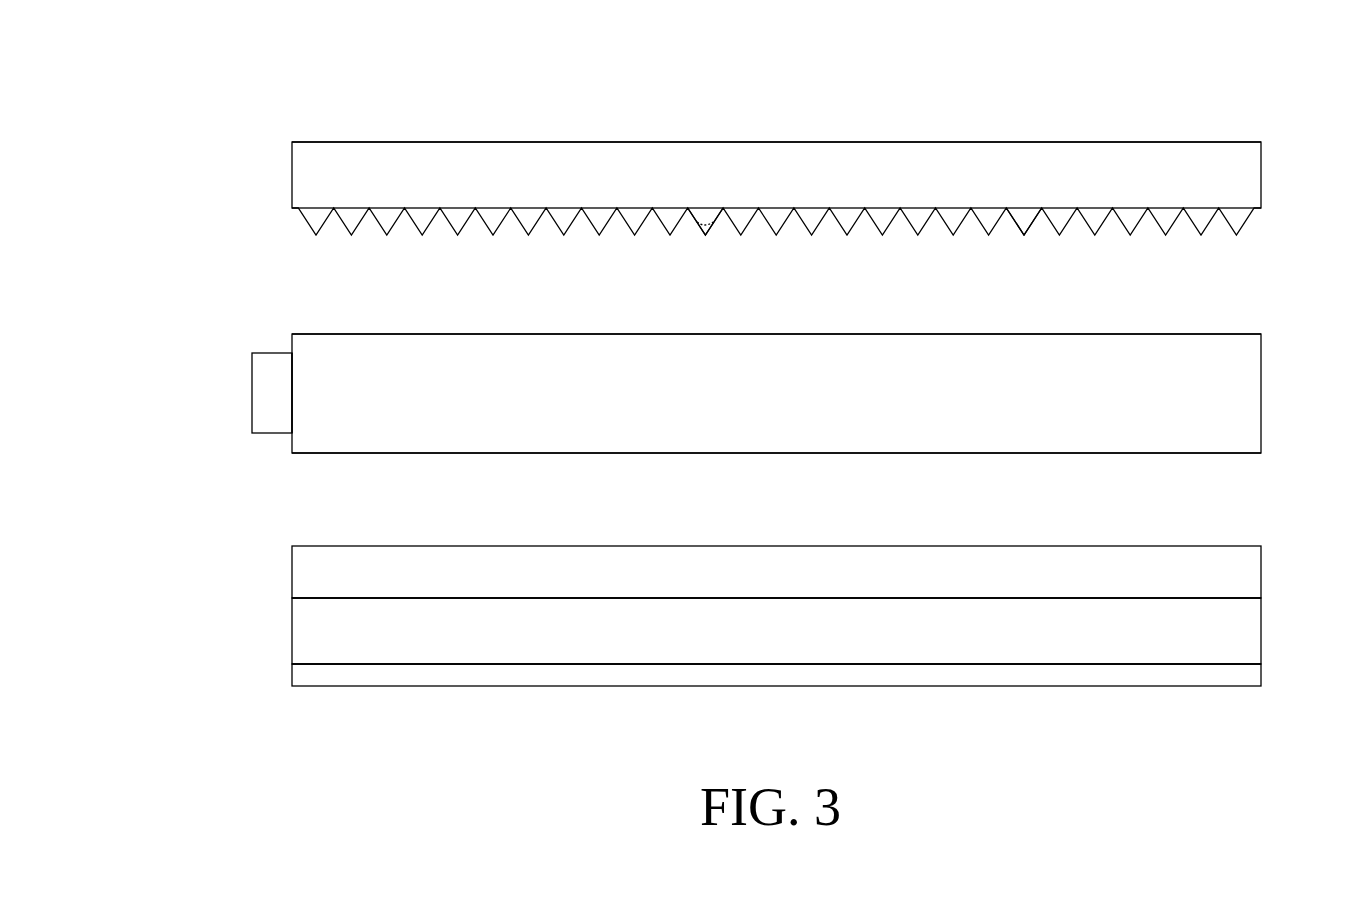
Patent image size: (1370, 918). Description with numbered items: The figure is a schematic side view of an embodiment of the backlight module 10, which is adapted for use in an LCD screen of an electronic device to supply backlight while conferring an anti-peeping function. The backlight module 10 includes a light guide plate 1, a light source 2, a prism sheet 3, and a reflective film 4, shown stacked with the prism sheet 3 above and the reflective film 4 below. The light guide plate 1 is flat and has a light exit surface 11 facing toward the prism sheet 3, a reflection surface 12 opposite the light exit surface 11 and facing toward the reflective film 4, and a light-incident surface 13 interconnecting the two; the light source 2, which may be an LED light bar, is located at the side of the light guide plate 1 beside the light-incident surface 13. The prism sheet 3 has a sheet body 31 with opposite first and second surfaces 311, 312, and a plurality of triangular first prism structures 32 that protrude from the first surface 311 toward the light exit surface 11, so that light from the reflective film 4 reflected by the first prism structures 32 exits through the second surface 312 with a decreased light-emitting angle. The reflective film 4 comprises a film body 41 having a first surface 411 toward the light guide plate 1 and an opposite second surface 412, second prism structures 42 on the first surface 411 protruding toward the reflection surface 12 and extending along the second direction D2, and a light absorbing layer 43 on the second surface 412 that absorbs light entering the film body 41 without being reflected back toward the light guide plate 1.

The backlight module 10 is at (258, 88).
The second direction D2 is at (932, 30).
The prism sheet 3 is at (822, 181).
The sheet body 31 is at (1243, 178).
The second surface 312 is at (990, 142).
The first surface 311 is at (1020, 212).
The first prism structures 32 is at (1130, 215).
The light guide plate 1 is at (770, 390).
The light exit surface 11 is at (592, 334).
The reflection surface 12 is at (648, 453).
The light-incident surface 13 is at (290, 373).
The light source 2 is at (252, 390).
The reflective film 4 is at (813, 617).
The film body 41 is at (1225, 640).
The second prism structures 42 is at (1242, 572).
The light absorbing layer 43 is at (1243, 673).
The first surface 411 is at (893, 598).
The second surface 412 is at (932, 664).